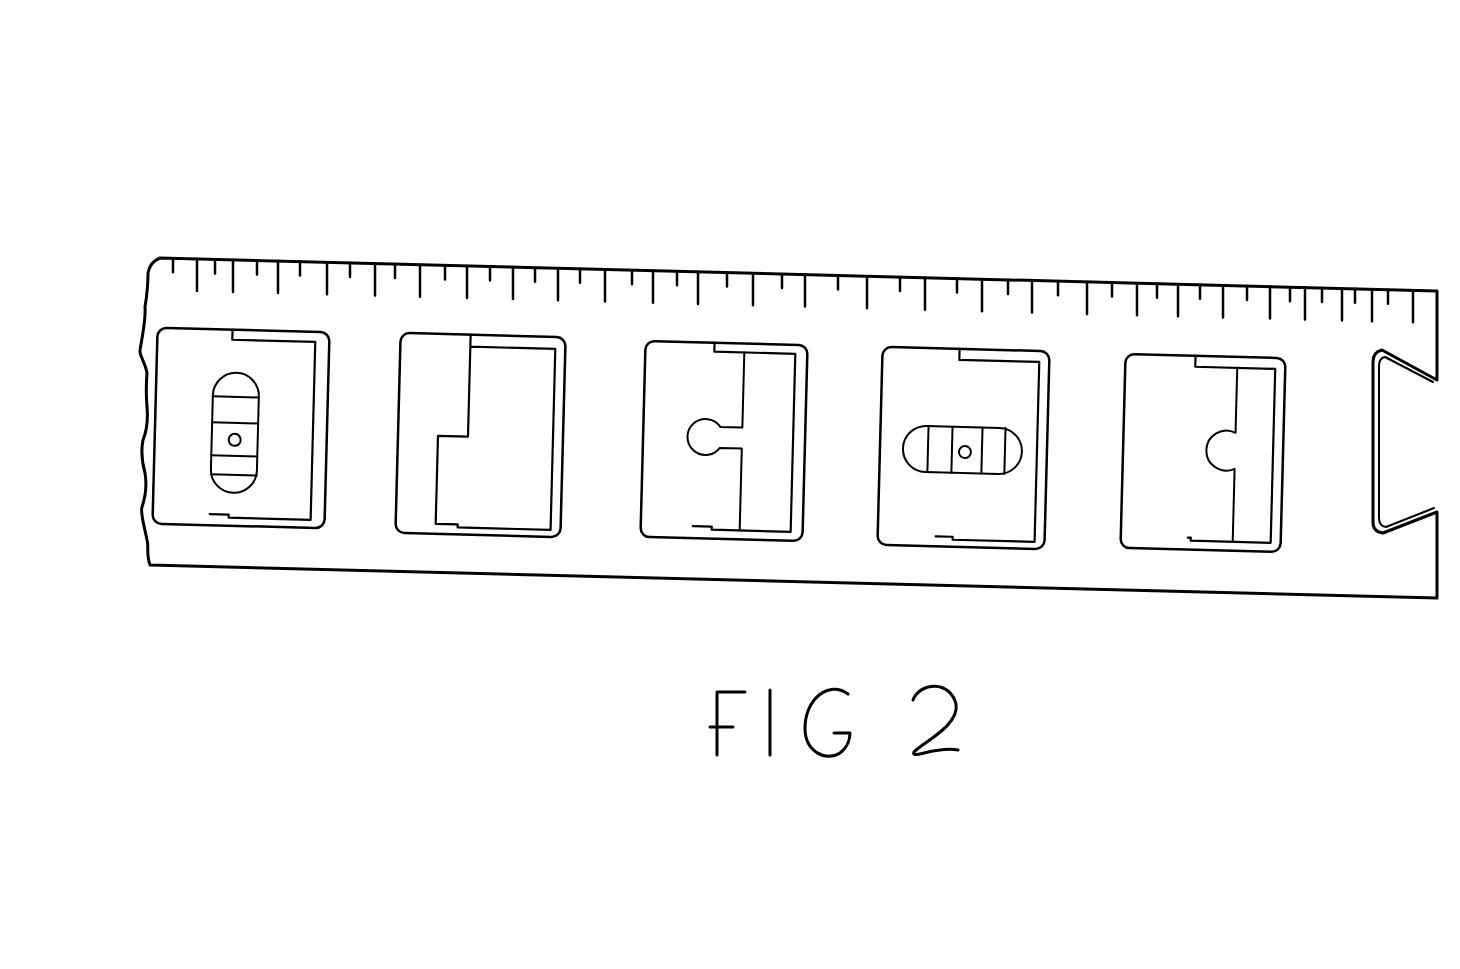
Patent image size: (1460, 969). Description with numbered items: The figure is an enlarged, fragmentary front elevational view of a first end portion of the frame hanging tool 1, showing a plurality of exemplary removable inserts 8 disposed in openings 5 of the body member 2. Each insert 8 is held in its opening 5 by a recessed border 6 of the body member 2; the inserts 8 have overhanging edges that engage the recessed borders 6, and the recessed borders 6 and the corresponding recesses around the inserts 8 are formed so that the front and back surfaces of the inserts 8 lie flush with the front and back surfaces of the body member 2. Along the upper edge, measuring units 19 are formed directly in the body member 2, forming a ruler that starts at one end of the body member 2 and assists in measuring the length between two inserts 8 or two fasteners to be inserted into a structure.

The frame hanging tool 1 is at (1214, 116).
The body member 2 is at (350, 553).
The opening 5 is at (1240, 522).
The recessed border 6 is at (1253, 525).
The removable insert 8 is at (179, 505).
The measuring unit 19 is at (885, 277).